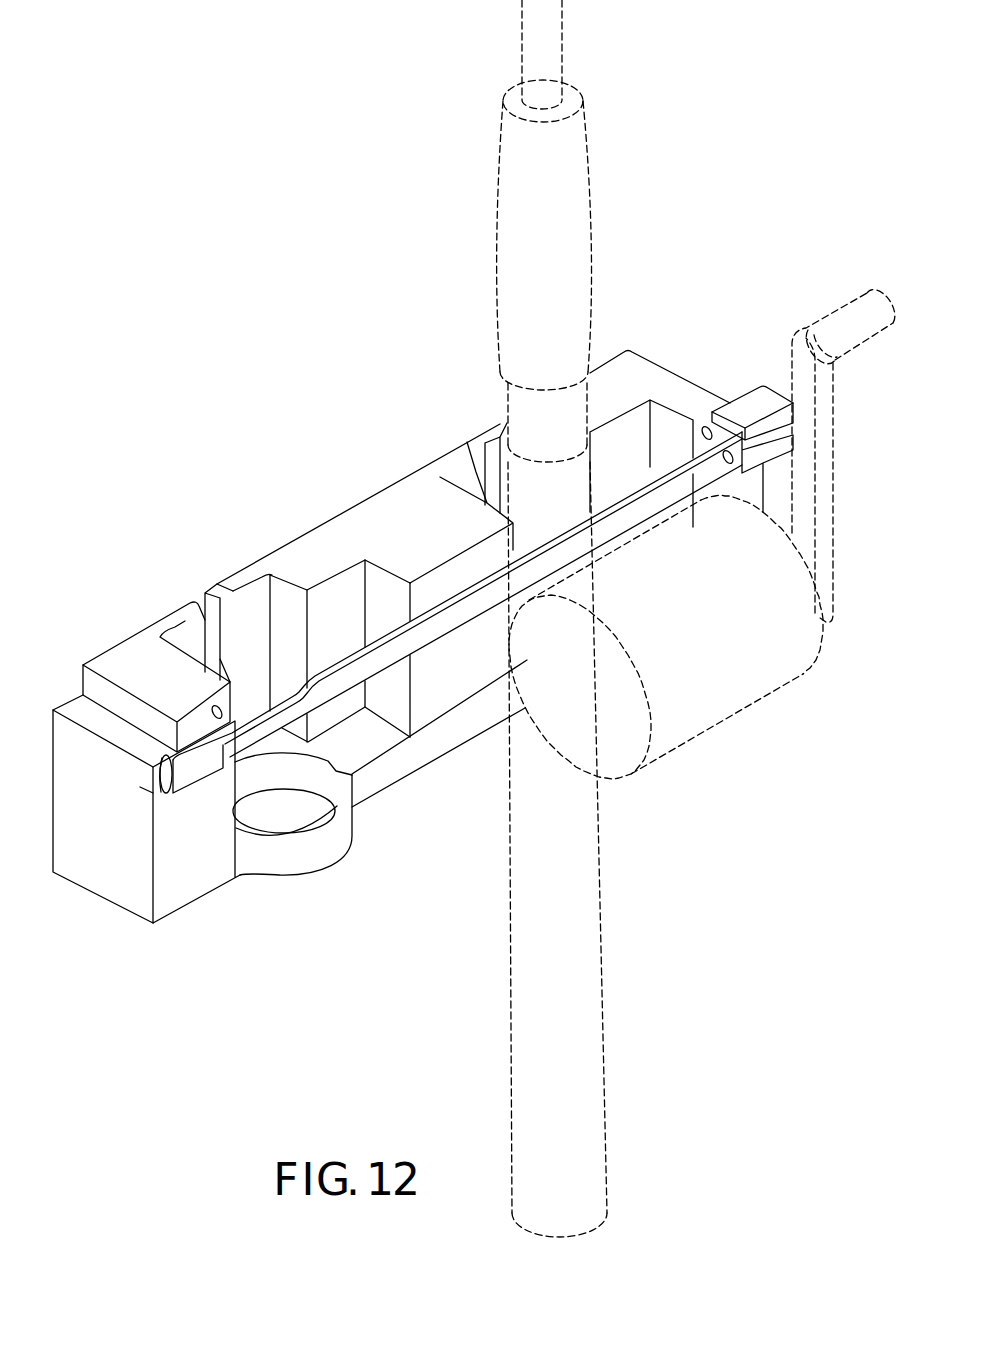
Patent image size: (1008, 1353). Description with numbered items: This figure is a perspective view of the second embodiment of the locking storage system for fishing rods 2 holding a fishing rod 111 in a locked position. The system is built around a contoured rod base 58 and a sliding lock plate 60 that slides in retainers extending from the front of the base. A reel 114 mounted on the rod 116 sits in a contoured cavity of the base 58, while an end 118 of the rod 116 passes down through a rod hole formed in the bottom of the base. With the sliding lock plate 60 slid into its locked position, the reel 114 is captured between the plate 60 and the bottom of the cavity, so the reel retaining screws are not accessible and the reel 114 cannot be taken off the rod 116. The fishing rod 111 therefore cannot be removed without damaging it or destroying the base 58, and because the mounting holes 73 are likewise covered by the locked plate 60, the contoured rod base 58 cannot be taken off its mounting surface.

The locking storage system for fishing rods 2 is at (318, 921).
The contoured rod base 58 is at (274, 570).
The sliding lock plate 60 is at (346, 668).
The mounting holes 73 is at (707, 426).
The fishing rod 111 is at (617, 238).
The reel 114 is at (728, 690).
The rod 116 is at (552, 38).
The end of rod 118 is at (573, 967).